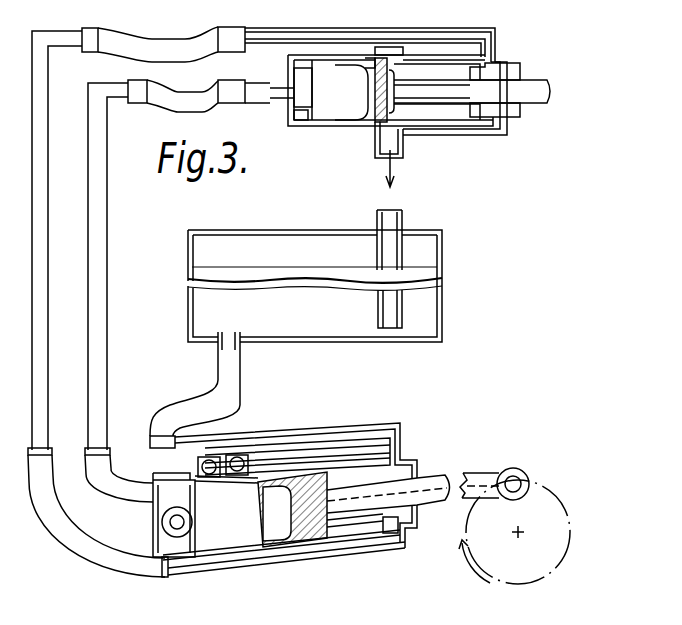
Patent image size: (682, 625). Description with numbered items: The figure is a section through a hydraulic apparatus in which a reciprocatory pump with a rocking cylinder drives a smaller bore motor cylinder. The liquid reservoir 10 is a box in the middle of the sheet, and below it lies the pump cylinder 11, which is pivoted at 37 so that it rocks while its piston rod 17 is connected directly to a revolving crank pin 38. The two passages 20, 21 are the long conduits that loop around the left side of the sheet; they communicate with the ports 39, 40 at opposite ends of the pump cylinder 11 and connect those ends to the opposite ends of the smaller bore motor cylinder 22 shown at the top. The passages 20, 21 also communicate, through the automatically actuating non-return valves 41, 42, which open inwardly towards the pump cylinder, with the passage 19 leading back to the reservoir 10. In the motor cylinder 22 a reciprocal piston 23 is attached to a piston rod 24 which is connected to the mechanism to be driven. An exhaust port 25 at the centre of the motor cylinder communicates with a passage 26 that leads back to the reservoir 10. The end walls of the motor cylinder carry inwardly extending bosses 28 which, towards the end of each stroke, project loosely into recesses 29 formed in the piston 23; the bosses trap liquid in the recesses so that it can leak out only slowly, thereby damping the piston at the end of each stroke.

The reservoir 10 is at (443, 308).
The pump cylinder 11 is at (331, 547).
The piston rod 17 is at (482, 480).
The passage 19 is at (232, 385).
The passage 20 is at (42, 246).
The passage 21 is at (108, 288).
The cylinder 22 is at (303, 124).
The piston 23 is at (374, 128).
The piston rod 24 is at (529, 92).
The exhaust port 25 is at (405, 138).
The passage 26 is at (391, 222).
The bosses 28 is at (298, 122).
The recesses 29 is at (360, 84).
The pivot 37 is at (163, 525).
The crank pin 38 is at (514, 477).
The port 39 is at (389, 533).
The port 40 is at (190, 488).
The non-return valve 41 is at (244, 457).
The non-return valve 42 is at (190, 474).